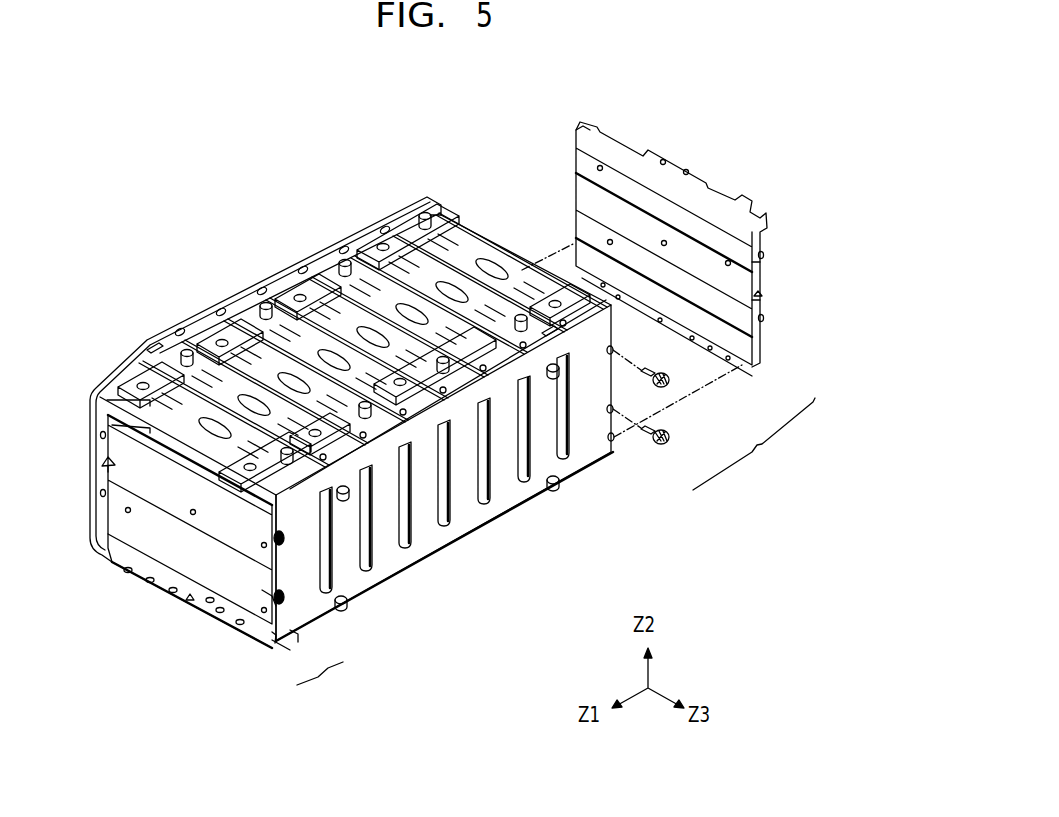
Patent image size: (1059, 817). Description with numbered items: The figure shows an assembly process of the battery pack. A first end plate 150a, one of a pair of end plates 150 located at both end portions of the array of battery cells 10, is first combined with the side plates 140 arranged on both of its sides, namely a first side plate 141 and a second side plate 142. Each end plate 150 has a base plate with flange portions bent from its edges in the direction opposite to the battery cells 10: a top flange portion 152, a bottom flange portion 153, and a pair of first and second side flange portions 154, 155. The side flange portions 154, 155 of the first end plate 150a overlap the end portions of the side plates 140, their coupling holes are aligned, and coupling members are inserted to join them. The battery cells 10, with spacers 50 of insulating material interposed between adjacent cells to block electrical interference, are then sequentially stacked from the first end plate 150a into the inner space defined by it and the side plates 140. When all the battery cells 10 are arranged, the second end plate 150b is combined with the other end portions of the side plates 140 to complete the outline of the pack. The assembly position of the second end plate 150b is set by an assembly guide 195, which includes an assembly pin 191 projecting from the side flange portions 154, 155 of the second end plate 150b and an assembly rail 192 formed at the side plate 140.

The battery cell 10 is at (333, 313).
The spacer 50 is at (358, 282).
The side plate 140 is at (352, 419).
The first side plate 141 is at (200, 300).
The second side plate 142 is at (437, 560).
The end plate 150 is at (433, 378).
The first end plate 150a is at (178, 603).
The second end plate 150b is at (686, 161).
The top flange portion 152 is at (140, 429).
The bottom flange portion 153 is at (137, 567).
The first side flange portion 154 is at (105, 478).
The second side flange portion 155 is at (580, 128).
The assembly pin 191 is at (758, 347).
The assembly rail 192 is at (614, 437).
The assembly guide 195 is at (556, 550).